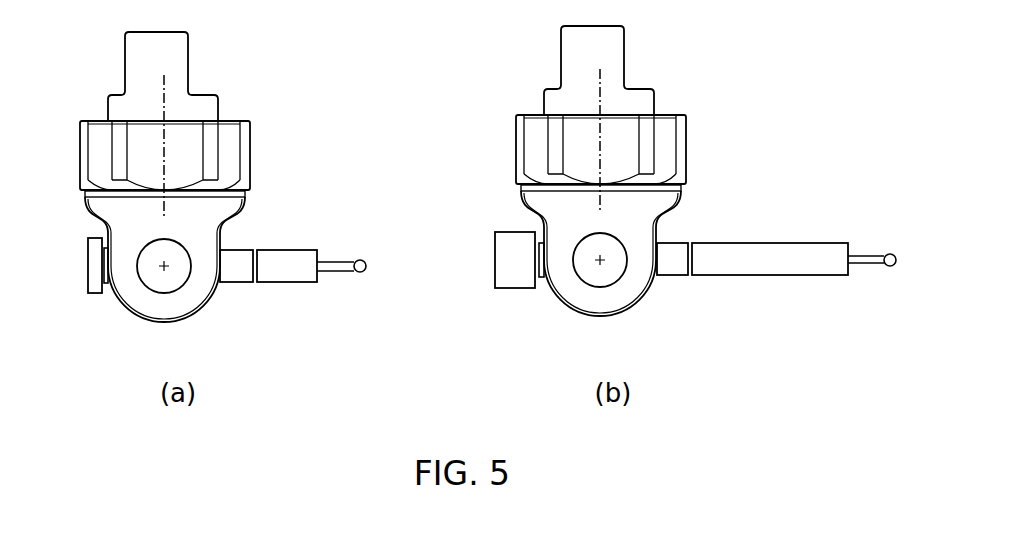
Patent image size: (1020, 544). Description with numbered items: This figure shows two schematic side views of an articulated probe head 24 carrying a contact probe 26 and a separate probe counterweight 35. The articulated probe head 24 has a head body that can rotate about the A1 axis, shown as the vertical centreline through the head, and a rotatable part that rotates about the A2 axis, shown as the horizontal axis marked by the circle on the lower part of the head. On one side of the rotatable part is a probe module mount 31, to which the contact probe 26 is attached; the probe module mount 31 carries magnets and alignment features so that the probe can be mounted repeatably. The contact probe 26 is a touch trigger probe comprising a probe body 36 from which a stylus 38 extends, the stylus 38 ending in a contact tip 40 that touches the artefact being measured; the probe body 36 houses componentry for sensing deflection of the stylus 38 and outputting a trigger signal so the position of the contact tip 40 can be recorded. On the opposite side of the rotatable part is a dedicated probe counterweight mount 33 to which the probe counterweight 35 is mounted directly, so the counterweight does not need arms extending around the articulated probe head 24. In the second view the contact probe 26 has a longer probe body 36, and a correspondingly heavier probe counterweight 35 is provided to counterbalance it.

The articulated probe head 24 is at (253, 101).
The contact probe 26 is at (581, 278).
The probe module mount 31 is at (243, 250).
The dedicated probe counterweight mount 33 is at (107, 285).
The probe counterweight 35 is at (87, 282).
The probe body 36 is at (295, 250).
The stylus 38 is at (338, 262).
The contact tip 40 is at (366, 260).
The A1 axis A1 is at (380, 130).
The A2 axis A2 is at (164, 266).